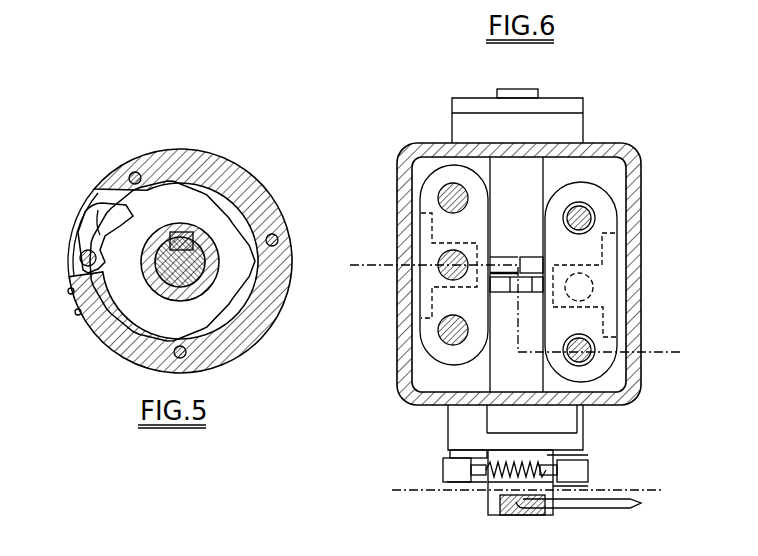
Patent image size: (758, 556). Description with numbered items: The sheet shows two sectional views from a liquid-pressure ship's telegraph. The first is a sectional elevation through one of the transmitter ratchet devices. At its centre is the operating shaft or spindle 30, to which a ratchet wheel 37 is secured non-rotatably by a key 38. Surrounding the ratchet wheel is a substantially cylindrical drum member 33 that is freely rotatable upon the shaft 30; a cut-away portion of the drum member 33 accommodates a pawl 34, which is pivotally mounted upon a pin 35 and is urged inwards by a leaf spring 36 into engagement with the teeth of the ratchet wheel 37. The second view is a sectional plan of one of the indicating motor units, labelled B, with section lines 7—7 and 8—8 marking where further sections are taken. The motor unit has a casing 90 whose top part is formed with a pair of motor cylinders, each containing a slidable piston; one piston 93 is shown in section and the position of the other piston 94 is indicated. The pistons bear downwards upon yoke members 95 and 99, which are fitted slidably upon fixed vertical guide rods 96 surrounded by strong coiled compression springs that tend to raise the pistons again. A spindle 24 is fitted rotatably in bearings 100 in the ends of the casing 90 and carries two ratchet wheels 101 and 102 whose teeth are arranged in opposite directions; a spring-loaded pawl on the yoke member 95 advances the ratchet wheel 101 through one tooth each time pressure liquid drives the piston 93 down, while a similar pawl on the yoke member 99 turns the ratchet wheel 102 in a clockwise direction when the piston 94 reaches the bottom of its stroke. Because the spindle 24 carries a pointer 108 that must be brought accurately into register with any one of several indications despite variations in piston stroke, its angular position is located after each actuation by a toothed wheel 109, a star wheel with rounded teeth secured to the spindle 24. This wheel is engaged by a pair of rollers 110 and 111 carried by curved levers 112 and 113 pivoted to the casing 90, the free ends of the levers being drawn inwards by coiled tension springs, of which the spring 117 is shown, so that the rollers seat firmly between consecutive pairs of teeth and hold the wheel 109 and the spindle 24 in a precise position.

In FIG. 5, the operating shaft 30 is at (203, 270).
In FIG. 5, the drum member 33 is at (180, 150).
In FIG. 5, the pawl 34 is at (102, 218).
In FIG. 5, the pin 35 is at (80, 260).
In FIG. 5, the leaf spring 36 is at (73, 248).
In FIG. 5, the ratchet wheel 37 is at (217, 172).
In FIG. 5, the key 38 is at (208, 232).
In FIG. 6, the spindle 24 is at (519, 96).
In FIG. 6, the casing 90 is at (431, 142).
In FIG. 6, the bearings 100 is at (567, 123).
In FIG. 6, the housing section B is at (595, 147).
In FIG. 6, the piston 93 is at (445, 262).
In FIG. 6, the piston 94 is at (590, 289).
In FIG. 6, the yoke member 95 is at (425, 336).
In FIG. 6, the guide rods 96 is at (436, 198).
In FIG. 6, the yoke member 99 is at (603, 318).
In FIG. 6, the ratchet wheel 101 is at (545, 264).
In FIG. 6, the ratchet wheel 102 is at (545, 284).
In FIG. 6, the section line 7- 7 is at (372, 265).
In FIG. 6, the section line 8- 8 is at (417, 490).
In FIG. 6, the pointer 108 is at (606, 505).
In FIG. 6, the toothed wheel 109 is at (540, 482).
In FIG. 6, the roller 110 is at (443, 470).
In FIG. 6, the roller 111 is at (588, 472).
In FIG. 6, the curved lever 112 is at (462, 462).
In FIG. 6, the curved lever 113 is at (567, 457).
In FIG. 6, the coiled tension spring 117 is at (520, 478).